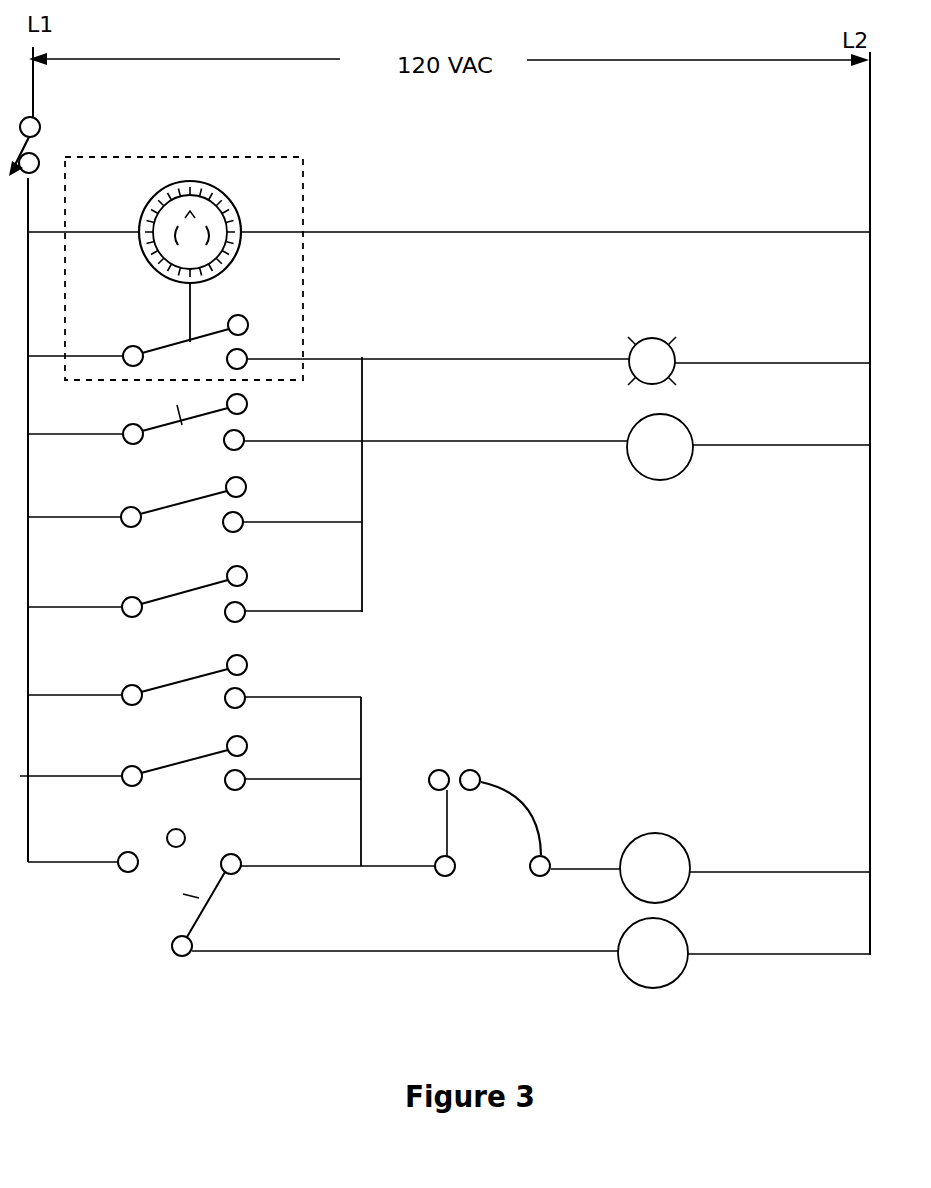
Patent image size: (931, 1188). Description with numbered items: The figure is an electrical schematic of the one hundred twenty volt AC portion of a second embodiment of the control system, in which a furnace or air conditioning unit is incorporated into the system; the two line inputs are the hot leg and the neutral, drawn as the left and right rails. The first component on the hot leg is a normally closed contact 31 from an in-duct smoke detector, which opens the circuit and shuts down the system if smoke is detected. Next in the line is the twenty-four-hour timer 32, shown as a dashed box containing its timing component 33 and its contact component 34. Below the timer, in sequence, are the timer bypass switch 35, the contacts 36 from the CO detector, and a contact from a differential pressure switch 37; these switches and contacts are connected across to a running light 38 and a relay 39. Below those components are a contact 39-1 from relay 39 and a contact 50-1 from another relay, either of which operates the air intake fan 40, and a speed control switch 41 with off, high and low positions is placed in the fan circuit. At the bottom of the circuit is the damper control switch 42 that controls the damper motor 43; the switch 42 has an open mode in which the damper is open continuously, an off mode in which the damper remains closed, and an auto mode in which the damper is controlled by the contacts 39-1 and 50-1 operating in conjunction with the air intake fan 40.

The contact 31 is at (47, 134).
The 24-hour timer 32 is at (322, 210).
The timing component 33 is at (230, 260).
The contact component 34 is at (165, 345).
The timer bypass switch 35 is at (152, 415).
The contacts 36 is at (150, 495).
The differential pressure switch 37 is at (148, 590).
The running light 38 is at (645, 338).
The relay 39 is at (688, 468).
The contact 39-1 is at (142, 678).
The contact 50-1 is at (130, 760).
The air intake fan 40 is at (690, 853).
The speed control switch 41 is at (514, 787).
The damper control switch 42 is at (138, 903).
The damper motor 43 is at (642, 987).